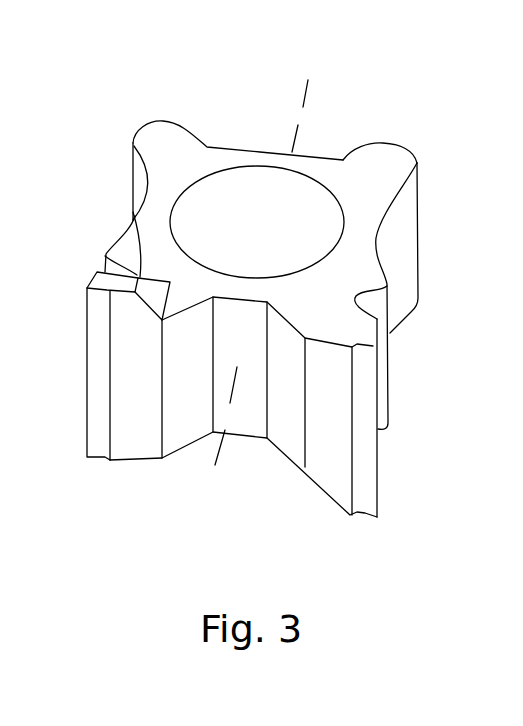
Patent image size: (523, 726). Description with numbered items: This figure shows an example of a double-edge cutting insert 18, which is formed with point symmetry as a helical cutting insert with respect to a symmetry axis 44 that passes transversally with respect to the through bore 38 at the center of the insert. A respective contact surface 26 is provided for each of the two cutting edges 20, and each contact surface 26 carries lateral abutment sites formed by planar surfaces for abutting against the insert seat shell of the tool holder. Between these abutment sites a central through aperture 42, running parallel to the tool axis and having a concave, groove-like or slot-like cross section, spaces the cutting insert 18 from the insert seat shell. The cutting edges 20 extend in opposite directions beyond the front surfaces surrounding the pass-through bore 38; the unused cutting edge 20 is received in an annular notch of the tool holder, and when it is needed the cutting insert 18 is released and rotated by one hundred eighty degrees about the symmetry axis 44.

The cutting insert 18 is at (385, 146).
The cutting edge 20 is at (125, 238).
The contact surface 26 is at (132, 155).
The through bore 38 is at (247, 183).
The central through aperture 42 is at (147, 192).
The symmetry axis 44 is at (310, 97).